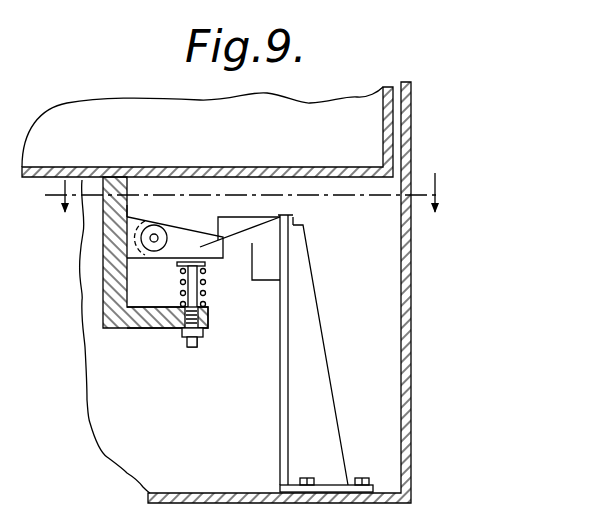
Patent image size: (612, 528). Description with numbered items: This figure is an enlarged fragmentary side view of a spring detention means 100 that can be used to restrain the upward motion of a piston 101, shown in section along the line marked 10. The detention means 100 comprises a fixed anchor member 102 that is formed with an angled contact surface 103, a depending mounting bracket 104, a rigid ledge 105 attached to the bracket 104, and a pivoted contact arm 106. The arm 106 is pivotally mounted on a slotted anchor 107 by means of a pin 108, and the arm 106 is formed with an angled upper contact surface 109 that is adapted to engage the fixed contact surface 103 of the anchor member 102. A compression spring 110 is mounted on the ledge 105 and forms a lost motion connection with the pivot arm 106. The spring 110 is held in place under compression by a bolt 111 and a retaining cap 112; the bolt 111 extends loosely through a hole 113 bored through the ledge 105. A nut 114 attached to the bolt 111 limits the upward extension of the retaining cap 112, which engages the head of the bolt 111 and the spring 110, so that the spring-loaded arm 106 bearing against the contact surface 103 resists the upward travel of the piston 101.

The section line 10- 10 is at (236, 192).
The spring detention means 100 is at (199, 216).
The piston 101 is at (343, 167).
The fixed anchor member 102 is at (308, 316).
The angled contact surface 103 is at (245, 244).
The depending mounting bracket 104 is at (105, 288).
The rigid ledge 105 is at (130, 329).
The pivoted contact arm 106 is at (293, 217).
The slotted anchor 107 is at (131, 220).
The pin 108 is at (156, 236).
The angled upper contact surface 109 is at (178, 228).
The compression spring 110 is at (210, 296).
The bolt 111 is at (193, 348).
The retaining cap 112 is at (177, 289).
The hole 113 is at (183, 335).
The nut 114 is at (203, 334).